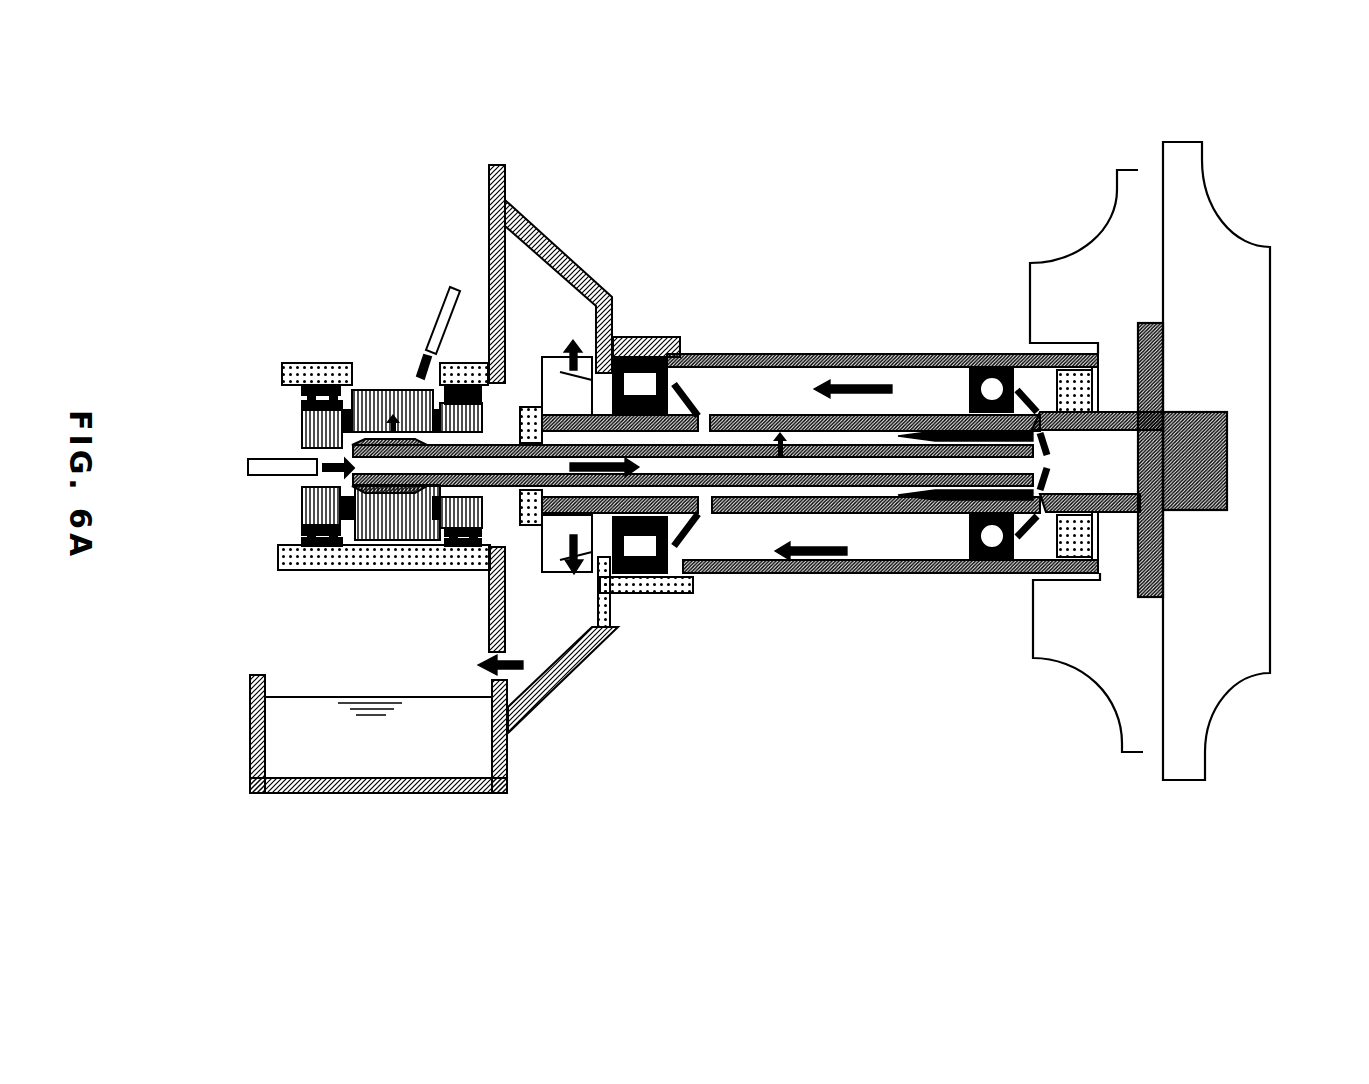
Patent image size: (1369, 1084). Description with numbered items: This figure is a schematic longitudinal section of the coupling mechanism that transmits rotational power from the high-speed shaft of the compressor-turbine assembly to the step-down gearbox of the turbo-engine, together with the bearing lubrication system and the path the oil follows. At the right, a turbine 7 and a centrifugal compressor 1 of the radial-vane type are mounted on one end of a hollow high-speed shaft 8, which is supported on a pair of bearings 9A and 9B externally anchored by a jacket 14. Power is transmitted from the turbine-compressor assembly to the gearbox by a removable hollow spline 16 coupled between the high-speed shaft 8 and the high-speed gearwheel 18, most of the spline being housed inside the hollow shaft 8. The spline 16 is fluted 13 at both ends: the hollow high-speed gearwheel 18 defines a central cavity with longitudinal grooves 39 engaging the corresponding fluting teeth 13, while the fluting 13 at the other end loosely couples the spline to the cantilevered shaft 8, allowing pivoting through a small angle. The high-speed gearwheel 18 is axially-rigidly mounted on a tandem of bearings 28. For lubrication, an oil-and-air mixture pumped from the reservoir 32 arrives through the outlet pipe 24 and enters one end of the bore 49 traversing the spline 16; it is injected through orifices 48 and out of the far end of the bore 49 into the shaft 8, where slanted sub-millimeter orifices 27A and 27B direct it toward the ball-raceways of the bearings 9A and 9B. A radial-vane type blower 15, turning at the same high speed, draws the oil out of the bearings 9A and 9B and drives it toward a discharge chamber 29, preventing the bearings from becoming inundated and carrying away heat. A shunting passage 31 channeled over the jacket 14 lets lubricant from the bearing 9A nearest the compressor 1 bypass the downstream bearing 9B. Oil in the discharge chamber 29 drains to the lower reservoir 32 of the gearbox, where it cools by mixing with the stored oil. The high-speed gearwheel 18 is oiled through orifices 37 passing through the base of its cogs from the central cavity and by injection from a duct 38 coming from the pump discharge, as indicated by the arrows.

The centrifugal compressor 1 is at (1103, 648).
The turbine 7 is at (1227, 262).
The high-speed shaft 8 is at (1082, 387).
The bearing 9A is at (982, 365).
The bearing 9B is at (680, 350).
The fluting 13 is at (355, 442).
The jacket 14 is at (825, 573).
The radial-vane type blower 15 is at (570, 403).
The hollow spline 16 is at (500, 450).
The high-speed gearwheel 18 is at (365, 398).
The outlet pipe 24 is at (243, 468).
The orifice 27A is at (1017, 390).
The orifice 27B is at (713, 510).
The tandem of bearings 28 is at (305, 380).
The discharge chamber 29 is at (555, 623).
The shunting passage 31 is at (672, 590).
The reservoir 32 is at (323, 712).
The orifices 37 is at (387, 397).
The duct 38 is at (457, 287).
The longitudinal grooves 39 is at (300, 507).
The orifices 48 is at (797, 413).
The bore 49 is at (847, 460).